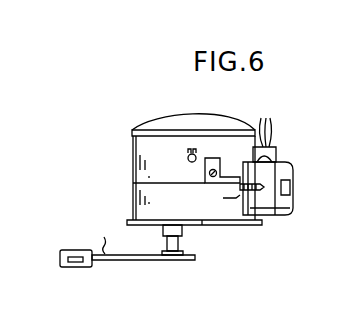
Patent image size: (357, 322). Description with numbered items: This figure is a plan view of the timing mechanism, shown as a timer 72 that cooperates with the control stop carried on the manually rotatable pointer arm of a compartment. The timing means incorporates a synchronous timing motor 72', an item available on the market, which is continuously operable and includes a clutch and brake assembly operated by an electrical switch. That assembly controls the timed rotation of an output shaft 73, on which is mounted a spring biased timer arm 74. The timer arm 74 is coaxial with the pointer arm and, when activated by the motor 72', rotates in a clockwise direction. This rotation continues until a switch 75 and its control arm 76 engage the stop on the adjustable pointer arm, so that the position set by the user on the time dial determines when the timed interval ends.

The timer 72 is at (210, 192).
The synchronous timing motor 72' is at (193, 123).
The output shaft 73 is at (183, 262).
The timer arm 74 is at (92, 235).
The switch 75 is at (67, 266).
The control arm 76 is at (77, 262).